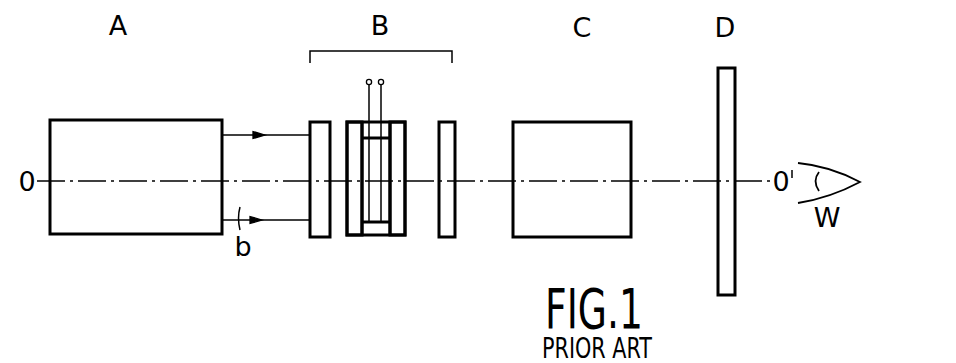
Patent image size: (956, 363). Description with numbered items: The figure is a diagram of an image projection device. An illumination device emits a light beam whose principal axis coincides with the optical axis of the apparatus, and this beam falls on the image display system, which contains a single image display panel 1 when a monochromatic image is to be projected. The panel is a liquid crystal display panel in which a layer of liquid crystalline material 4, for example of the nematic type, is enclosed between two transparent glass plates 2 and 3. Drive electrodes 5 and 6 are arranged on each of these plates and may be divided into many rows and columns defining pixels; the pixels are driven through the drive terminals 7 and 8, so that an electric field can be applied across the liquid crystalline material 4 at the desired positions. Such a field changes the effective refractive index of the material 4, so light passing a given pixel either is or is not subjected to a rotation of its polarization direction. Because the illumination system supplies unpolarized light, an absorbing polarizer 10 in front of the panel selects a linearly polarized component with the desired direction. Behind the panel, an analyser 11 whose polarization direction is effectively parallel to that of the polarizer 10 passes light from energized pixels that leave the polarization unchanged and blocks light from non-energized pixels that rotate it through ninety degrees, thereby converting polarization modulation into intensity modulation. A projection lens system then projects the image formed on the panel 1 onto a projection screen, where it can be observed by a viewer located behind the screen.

The image display panel 1 is at (374, 192).
The transparent plate 2 is at (357, 236).
The transparent plate 3 is at (393, 236).
The layer of liquid crystalline material 4 is at (377, 237).
The drive electrode 5 is at (361, 157).
The drive electrode 6 is at (391, 155).
The drive terminal 7 is at (367, 80).
The drive terminal 8 is at (383, 80).
The absorbing polarizer 10 is at (313, 238).
The analyser 11 is at (446, 238).